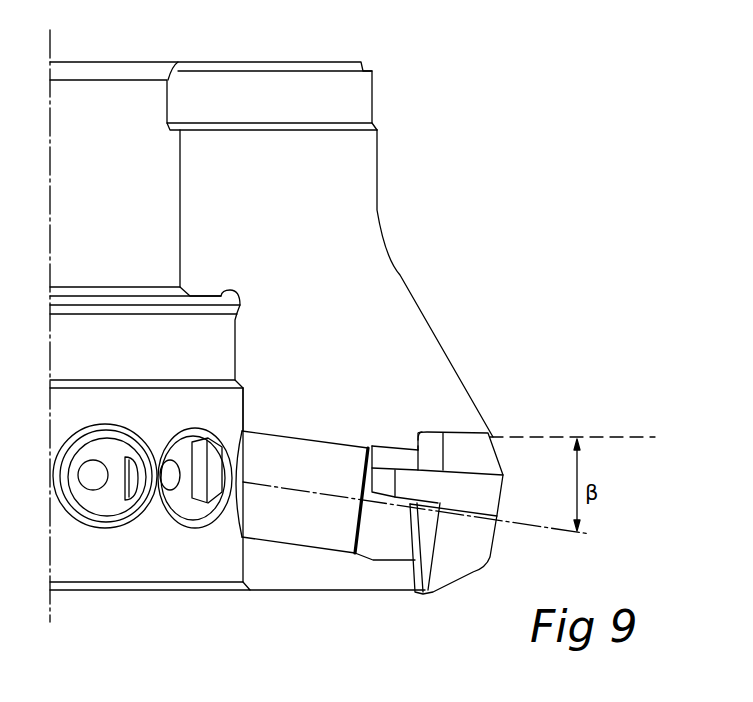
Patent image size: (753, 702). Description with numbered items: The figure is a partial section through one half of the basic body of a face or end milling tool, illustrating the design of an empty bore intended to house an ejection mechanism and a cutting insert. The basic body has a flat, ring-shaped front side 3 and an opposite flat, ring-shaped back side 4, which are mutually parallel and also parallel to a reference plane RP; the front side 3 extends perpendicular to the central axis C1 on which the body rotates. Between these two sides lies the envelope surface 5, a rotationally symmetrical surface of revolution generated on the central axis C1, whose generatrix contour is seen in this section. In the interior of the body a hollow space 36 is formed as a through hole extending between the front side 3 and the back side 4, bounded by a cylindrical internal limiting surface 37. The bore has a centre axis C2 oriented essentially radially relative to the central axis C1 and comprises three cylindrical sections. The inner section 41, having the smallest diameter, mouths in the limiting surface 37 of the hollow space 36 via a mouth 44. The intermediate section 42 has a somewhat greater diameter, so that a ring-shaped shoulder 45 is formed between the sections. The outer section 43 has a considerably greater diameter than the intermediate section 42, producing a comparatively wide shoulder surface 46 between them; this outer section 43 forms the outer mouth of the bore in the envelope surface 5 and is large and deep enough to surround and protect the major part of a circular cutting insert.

The front side 3 is at (310, 598).
The back side 4 is at (257, 62).
The envelope surface 5 is at (416, 306).
The hollow space 36 is at (118, 563).
The internal limiting surface 37 is at (172, 552).
The inner section 41 is at (307, 438).
The intermediate section 42 is at (403, 450).
The outer section 43 is at (494, 445).
The mouth 44 is at (238, 440).
The ring-shaped shoulder 45 is at (358, 551).
The shoulder surface 46 is at (423, 443).
The central axis C1 is at (50, 603).
The centre axis of bore C2 is at (519, 527).
The reference plane RP is at (572, 426).